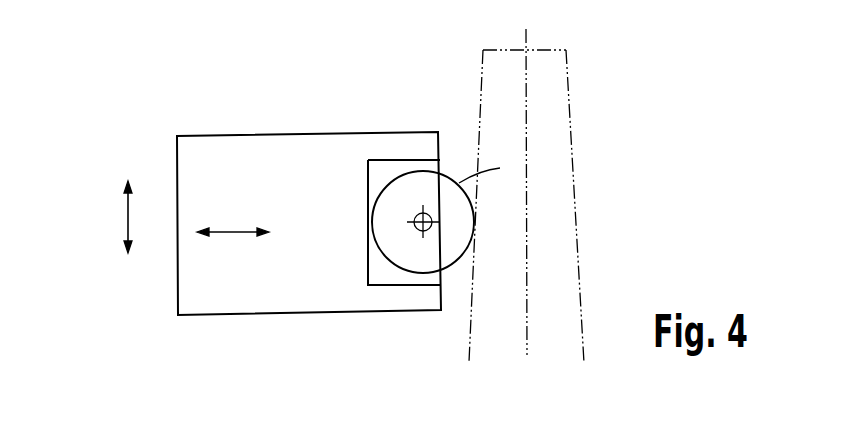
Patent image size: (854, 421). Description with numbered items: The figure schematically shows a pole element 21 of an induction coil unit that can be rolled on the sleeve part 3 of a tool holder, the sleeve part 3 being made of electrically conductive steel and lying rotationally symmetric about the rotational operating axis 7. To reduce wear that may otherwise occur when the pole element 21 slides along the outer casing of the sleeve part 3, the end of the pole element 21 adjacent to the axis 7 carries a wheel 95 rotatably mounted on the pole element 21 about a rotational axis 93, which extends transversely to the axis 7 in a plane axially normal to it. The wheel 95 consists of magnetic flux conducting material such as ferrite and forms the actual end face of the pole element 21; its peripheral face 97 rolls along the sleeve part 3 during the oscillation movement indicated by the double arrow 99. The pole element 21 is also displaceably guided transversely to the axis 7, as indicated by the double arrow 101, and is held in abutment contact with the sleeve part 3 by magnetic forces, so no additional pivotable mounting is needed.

The sleeve part 3 is at (480, 70).
The rotational operating axis 7 is at (526, 92).
The pole element 21 is at (232, 158).
The rotational axis of the wheel 93 is at (417, 213).
The wheel 95 is at (415, 250).
The peripheral face 97 is at (500, 168).
The double arrow indicating oscillation movement 99 is at (127, 217).
The double arrow indicating transverse displacement 101 is at (233, 233).